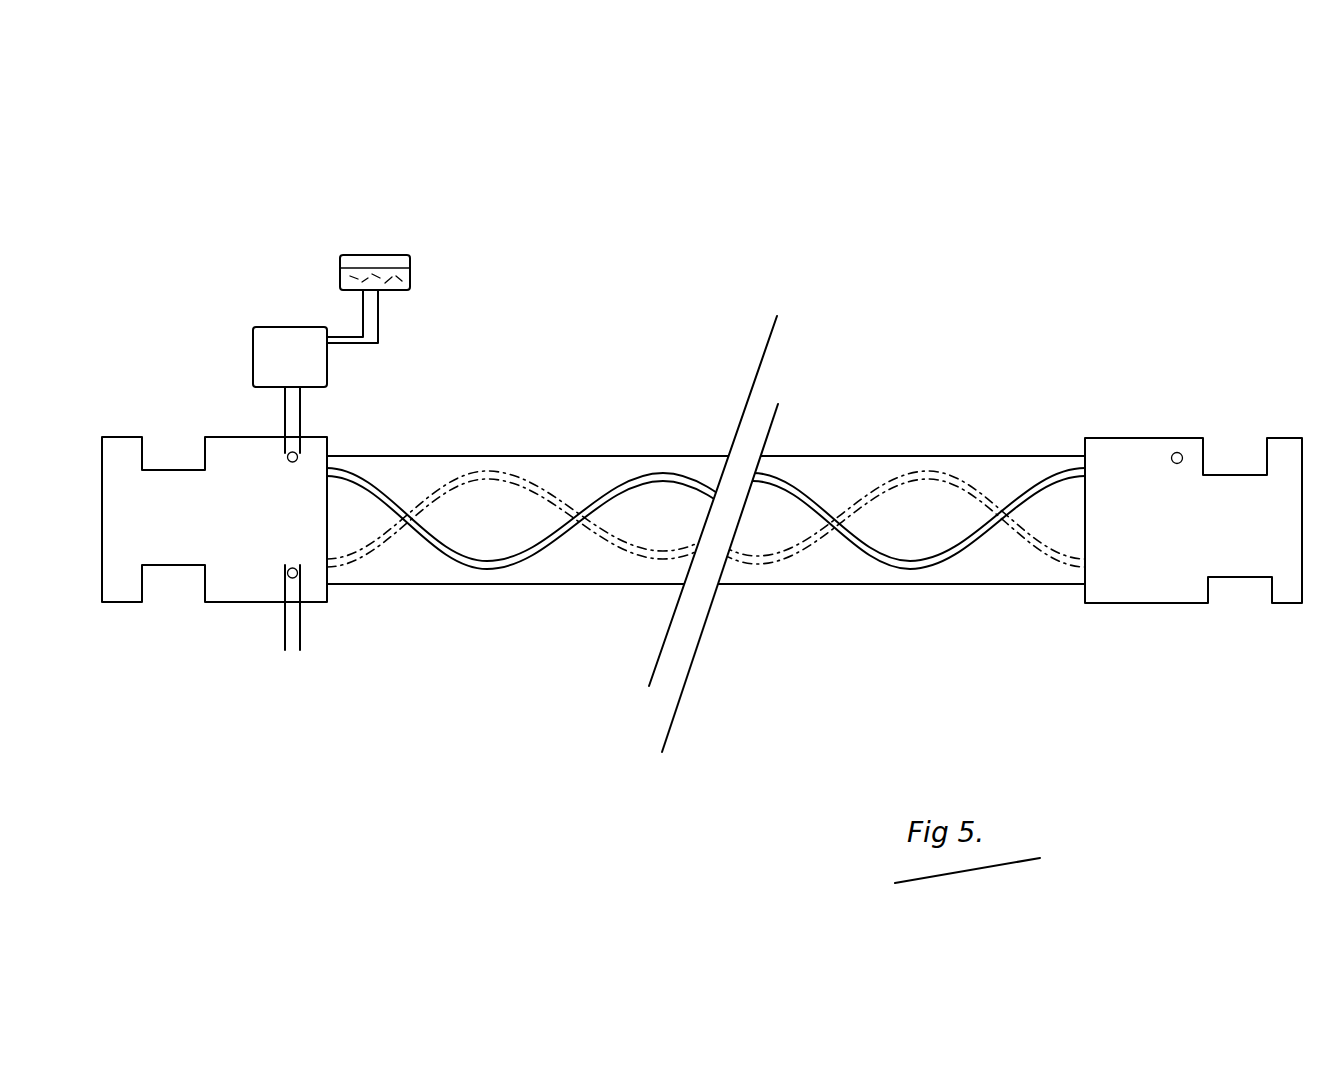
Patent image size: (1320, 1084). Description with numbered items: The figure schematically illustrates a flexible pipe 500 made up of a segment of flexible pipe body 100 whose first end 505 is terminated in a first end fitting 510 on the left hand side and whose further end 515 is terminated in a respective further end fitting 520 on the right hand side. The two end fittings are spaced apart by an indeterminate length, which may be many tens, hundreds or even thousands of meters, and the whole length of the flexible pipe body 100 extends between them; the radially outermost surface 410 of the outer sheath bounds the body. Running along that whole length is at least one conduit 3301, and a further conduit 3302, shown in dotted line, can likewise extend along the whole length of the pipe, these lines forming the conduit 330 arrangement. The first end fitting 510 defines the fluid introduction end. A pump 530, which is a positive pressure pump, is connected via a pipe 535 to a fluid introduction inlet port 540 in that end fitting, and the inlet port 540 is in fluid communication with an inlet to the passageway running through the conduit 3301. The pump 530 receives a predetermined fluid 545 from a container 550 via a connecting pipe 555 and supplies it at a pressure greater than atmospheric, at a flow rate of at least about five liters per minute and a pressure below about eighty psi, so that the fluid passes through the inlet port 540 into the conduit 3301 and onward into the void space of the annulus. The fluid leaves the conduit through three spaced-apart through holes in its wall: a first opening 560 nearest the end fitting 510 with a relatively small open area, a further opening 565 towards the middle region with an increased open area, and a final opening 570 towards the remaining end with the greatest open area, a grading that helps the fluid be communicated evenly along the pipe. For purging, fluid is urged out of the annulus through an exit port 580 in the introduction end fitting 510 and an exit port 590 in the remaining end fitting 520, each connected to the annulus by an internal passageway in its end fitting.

The flexible pipe 500 is at (860, 248).
The flexible pipe body 100 is at (706, 498).
The radially outermost surface of the outer sheath 410 is at (860, 454).
The conduit 330 is at (706, 576).
The conduit 3301 is at (550, 555).
The further conduit 3302 is at (808, 553).
The first end 505 is at (367, 640).
The first end fitting 510 is at (118, 583).
The further end 515 is at (1075, 625).
The further end fitting 520 is at (1293, 592).
The pump 530 is at (262, 358).
The pipe 535 is at (302, 410).
The fluid introduction inlet port 540 is at (282, 470).
The predetermined fluid 545 is at (410, 283).
The container 550 is at (340, 262).
The connecting pipe 555 is at (383, 337).
The first opening 560 is at (408, 543).
The further opening 565 is at (640, 478).
The final opening 570 is at (928, 583).
The exit port 580 is at (272, 570).
The exit port 590 is at (1175, 432).